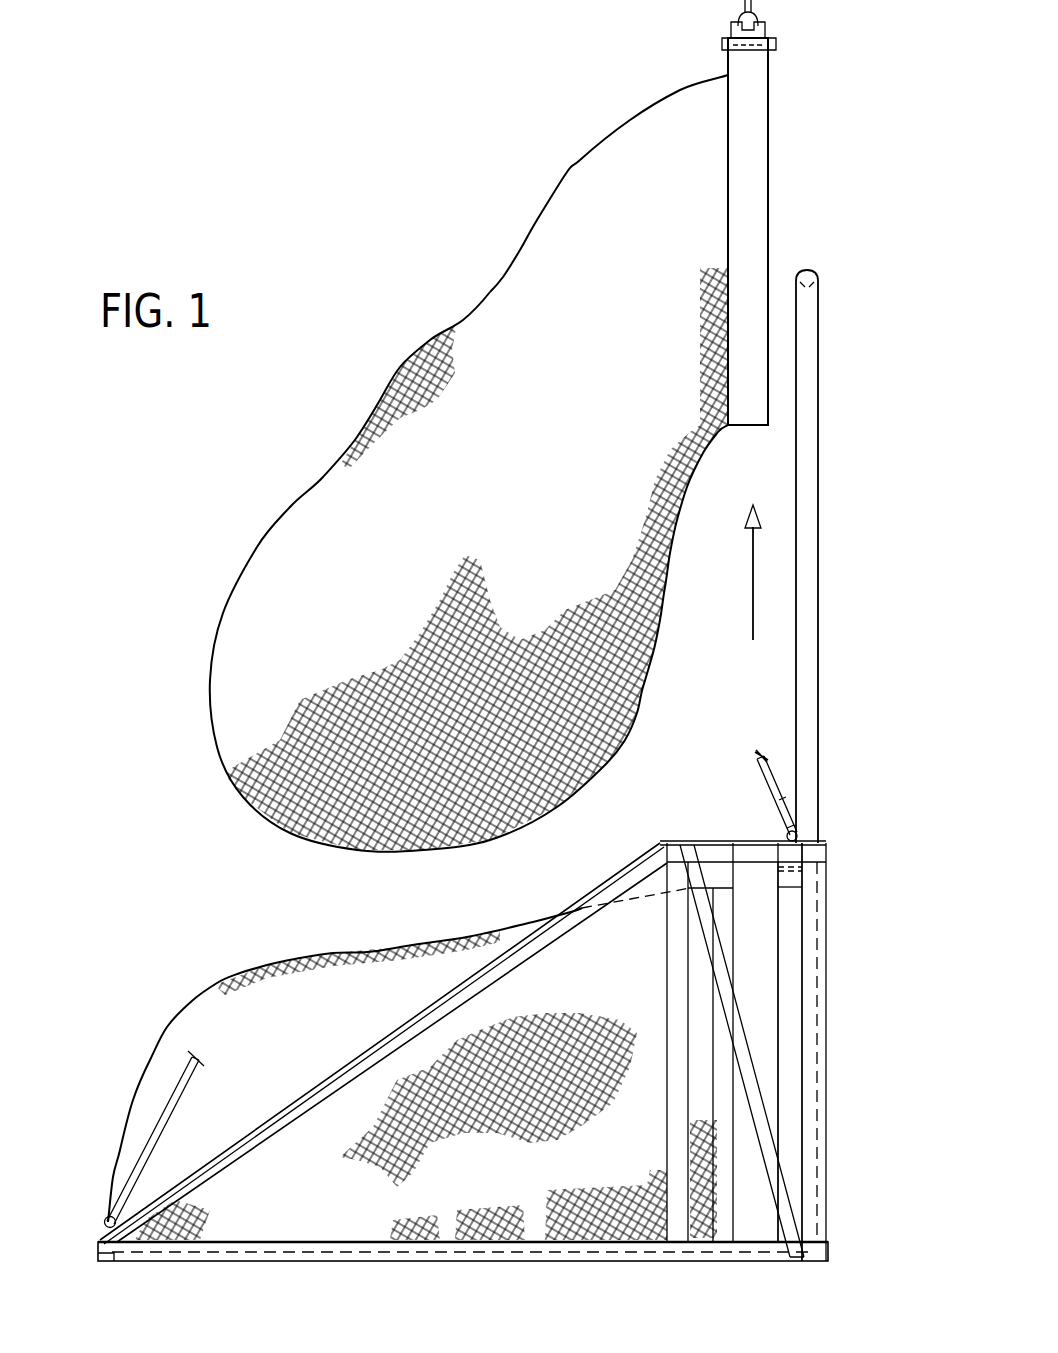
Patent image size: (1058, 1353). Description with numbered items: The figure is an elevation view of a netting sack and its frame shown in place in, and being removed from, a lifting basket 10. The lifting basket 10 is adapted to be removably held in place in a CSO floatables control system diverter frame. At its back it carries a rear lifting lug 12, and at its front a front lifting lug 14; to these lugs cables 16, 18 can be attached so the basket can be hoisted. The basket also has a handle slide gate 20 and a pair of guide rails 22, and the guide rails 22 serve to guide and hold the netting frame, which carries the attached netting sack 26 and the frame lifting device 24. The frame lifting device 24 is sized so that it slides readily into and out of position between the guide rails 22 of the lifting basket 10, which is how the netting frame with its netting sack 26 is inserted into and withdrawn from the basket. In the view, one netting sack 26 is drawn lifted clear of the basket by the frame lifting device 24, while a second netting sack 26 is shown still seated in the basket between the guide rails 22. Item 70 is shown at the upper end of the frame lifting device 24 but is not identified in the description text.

The lifting basket 10 is at (603, 882).
The rear lifting lug 12 is at (105, 1214).
The front lifting lug 14 is at (780, 827).
The cable 16 is at (176, 1092).
The cable 18 is at (775, 765).
The handle slide gate 20 is at (820, 563).
The guide rails 22 is at (790, 963).
The frame lifting device 24 is at (770, 140).
The netting sack 26 is at (477, 297).
The hook assembly 70 is at (712, 9).